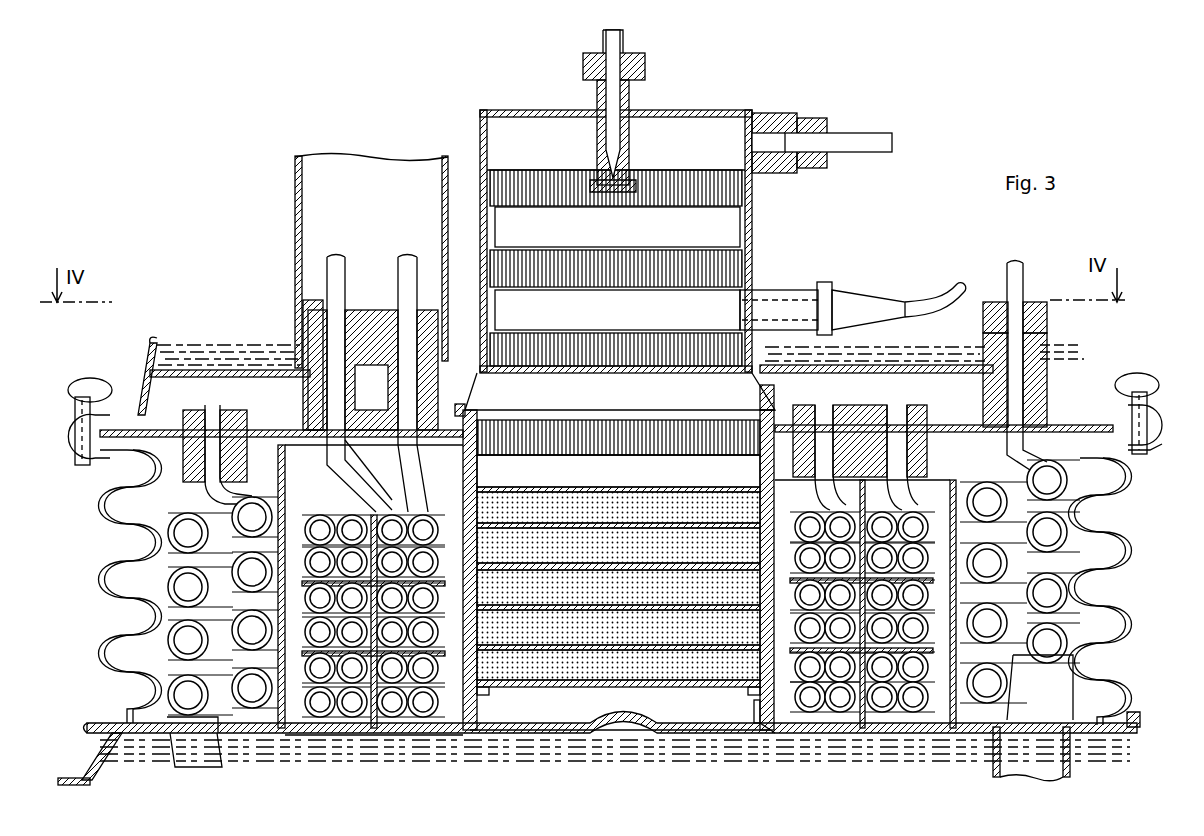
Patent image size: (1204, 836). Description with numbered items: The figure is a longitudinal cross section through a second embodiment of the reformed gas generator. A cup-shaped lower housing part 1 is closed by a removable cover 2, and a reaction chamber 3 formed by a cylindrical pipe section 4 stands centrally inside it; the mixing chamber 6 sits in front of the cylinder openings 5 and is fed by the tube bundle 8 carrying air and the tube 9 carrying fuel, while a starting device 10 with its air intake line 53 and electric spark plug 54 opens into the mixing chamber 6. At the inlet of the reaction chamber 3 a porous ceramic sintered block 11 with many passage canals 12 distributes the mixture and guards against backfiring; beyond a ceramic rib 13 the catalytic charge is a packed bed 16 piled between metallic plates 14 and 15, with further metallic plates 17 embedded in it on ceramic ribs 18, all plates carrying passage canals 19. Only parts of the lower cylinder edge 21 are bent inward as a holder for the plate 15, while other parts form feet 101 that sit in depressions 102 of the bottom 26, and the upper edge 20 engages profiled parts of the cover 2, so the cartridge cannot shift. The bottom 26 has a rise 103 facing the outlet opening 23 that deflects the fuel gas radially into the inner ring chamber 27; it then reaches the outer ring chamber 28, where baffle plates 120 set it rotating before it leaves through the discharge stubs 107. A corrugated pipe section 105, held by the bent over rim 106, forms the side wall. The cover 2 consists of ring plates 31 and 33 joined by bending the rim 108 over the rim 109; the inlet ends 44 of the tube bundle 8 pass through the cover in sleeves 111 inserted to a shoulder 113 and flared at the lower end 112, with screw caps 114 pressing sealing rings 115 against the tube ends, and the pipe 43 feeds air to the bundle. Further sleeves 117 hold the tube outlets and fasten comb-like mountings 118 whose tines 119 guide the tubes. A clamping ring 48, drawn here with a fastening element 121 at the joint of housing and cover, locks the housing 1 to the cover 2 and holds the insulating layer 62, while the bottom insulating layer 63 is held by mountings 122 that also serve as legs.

The lower housing part 1 is at (1122, 584).
The cover 2 is at (1086, 352).
The reaction chamber 3 is at (642, 680).
The cylindrical pipe section 4 is at (464, 498).
The cylinder openings 5 is at (592, 398).
The mixing chamber 6 is at (758, 414).
The tube bundle 8 is at (410, 705).
The tube 9 is at (246, 702).
The starting device 10 is at (480, 128).
The sintered block 11 is at (630, 418).
The passage canals 12 is at (688, 404).
The ceramic rib 13 is at (480, 471).
The metallic plate 14 is at (572, 490).
The metallic plate 15 is at (538, 688).
The packed bed 16 is at (562, 632).
The metallic plates 17 is at (638, 608).
The ceramic ribs 18 is at (740, 576).
The passage canals 19 is at (618, 506).
The upper edge 20 is at (477, 418).
The lower cylinder edge 21 is at (480, 692).
The outlet opening 23 is at (664, 690).
The bottom 26 is at (530, 735).
The inner ring chamber 27 is at (938, 445).
The outer ring chamber 28 is at (968, 426).
The lower ring plate 31 is at (165, 431).
The upper ring plate 33 is at (186, 372).
The pipe 43 is at (296, 182).
The inlet ends 44 is at (338, 262).
The clamping ring 48 is at (1164, 445).
The air intake line 53 is at (856, 142).
The electric spark plug 54 is at (828, 292).
The insulating layer 62 is at (232, 356).
The insulating layer 63 is at (330, 752).
The projecting posts or feet 101 is at (760, 706).
The depressions 102 is at (770, 732).
The rise 103 is at (623, 725).
The corrugated pipe section 105 is at (1115, 518).
The bent over rim 106 is at (1138, 714).
The discharge stubs 107 is at (1072, 754).
The rim 108 is at (94, 458).
The rim 109 is at (136, 392).
The sleeves 111 is at (324, 456).
The lower end 112 is at (408, 452).
The shoulder 113 is at (304, 362).
The screw caps 114 is at (370, 312).
The sealing rings 115 is at (428, 302).
The sleeves 117 is at (240, 424).
The comb-like mountings 118 is at (375, 705).
The tines 119 is at (305, 660).
The baffle plates 120 is at (185, 725).
The wing nut 121 is at (104, 375).
The mountings 122 is at (100, 776).